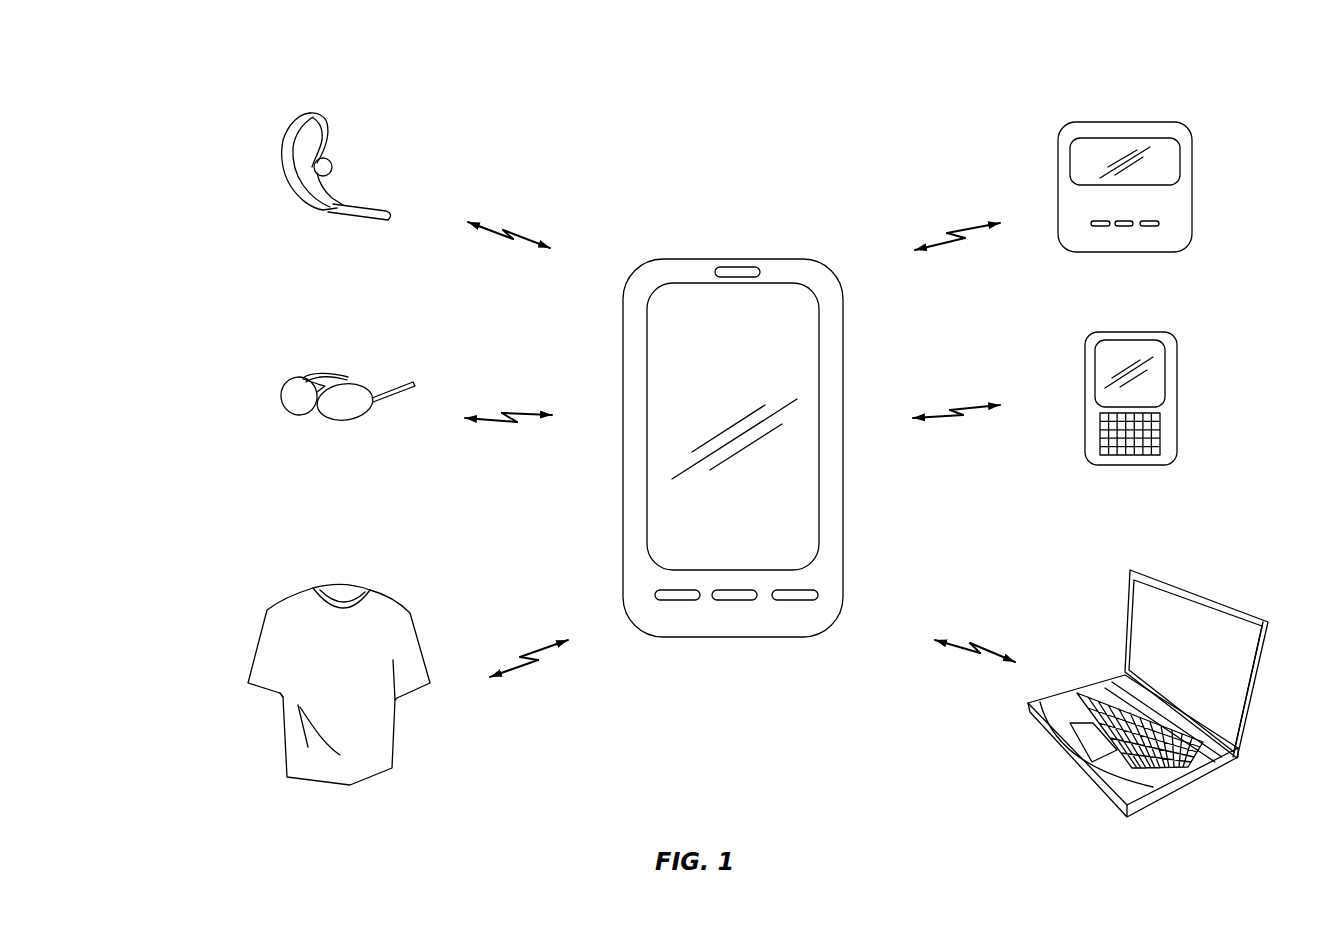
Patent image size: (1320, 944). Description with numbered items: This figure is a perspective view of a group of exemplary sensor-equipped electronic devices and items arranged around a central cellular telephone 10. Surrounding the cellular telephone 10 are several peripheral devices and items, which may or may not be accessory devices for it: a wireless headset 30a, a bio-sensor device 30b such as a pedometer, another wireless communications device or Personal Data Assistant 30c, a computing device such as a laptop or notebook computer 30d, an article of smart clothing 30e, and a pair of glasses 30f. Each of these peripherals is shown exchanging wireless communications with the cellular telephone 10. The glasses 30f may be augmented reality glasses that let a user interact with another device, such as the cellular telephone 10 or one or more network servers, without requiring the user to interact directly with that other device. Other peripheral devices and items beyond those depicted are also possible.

The cellular telephone 10 is at (780, 82).
The wireless headset 30a is at (285, 105).
The bio-sensor device 30b is at (1165, 105).
The Personal Data Assistant 30c is at (1170, 323).
The laptop or notebook computer 30d is at (1183, 568).
The smart clothing 30e is at (300, 585).
The pair of glasses 30f is at (294, 368).